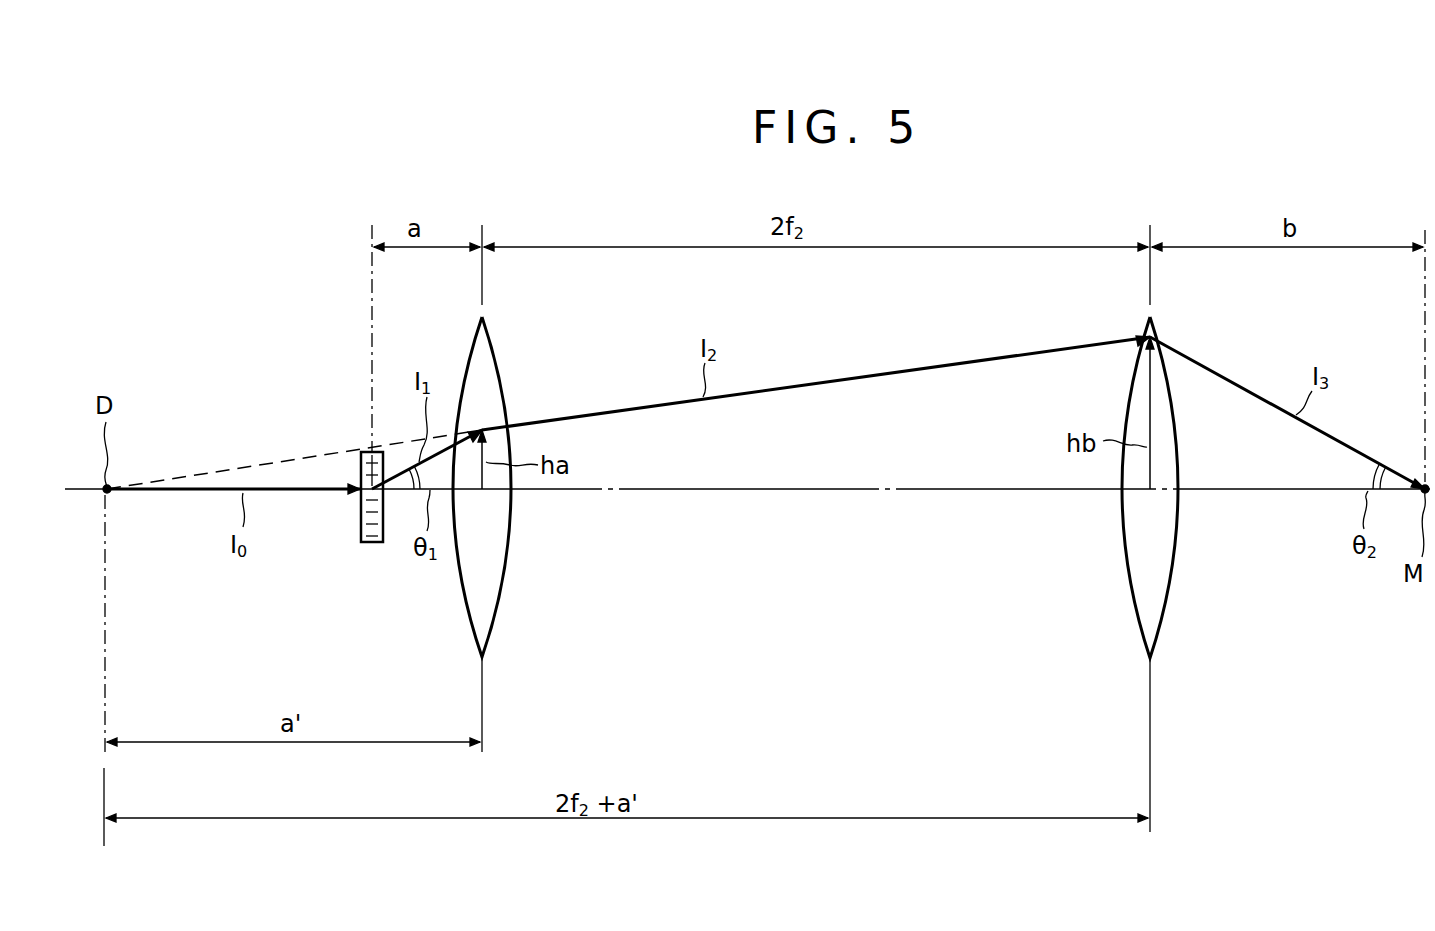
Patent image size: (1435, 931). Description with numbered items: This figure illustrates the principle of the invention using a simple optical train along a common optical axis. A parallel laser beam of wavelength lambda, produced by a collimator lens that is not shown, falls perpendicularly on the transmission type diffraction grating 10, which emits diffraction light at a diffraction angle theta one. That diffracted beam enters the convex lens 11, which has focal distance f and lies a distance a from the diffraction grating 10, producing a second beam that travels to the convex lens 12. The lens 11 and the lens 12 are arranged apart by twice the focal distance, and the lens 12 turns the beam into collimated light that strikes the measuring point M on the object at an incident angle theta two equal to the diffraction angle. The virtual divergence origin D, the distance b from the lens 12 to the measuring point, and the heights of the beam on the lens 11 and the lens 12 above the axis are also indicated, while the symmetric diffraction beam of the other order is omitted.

The diffraction grating 10 is at (369, 543).
The lens 11 is at (494, 600).
The lens 12 is at (1140, 628).